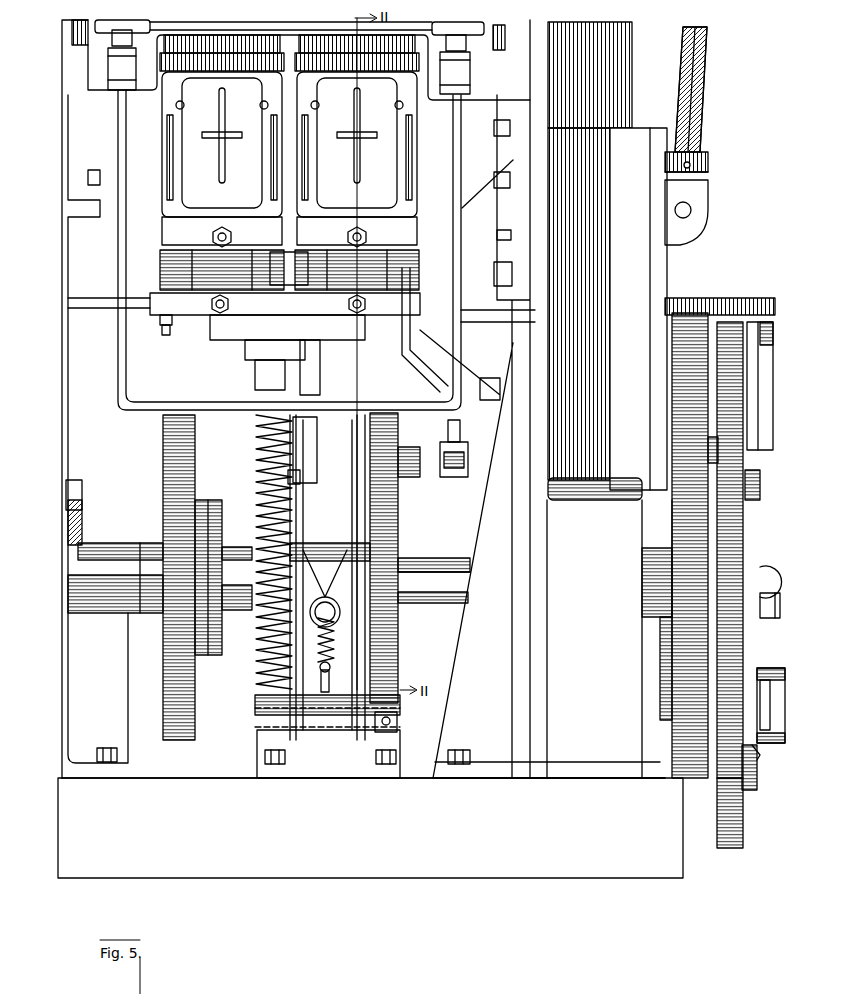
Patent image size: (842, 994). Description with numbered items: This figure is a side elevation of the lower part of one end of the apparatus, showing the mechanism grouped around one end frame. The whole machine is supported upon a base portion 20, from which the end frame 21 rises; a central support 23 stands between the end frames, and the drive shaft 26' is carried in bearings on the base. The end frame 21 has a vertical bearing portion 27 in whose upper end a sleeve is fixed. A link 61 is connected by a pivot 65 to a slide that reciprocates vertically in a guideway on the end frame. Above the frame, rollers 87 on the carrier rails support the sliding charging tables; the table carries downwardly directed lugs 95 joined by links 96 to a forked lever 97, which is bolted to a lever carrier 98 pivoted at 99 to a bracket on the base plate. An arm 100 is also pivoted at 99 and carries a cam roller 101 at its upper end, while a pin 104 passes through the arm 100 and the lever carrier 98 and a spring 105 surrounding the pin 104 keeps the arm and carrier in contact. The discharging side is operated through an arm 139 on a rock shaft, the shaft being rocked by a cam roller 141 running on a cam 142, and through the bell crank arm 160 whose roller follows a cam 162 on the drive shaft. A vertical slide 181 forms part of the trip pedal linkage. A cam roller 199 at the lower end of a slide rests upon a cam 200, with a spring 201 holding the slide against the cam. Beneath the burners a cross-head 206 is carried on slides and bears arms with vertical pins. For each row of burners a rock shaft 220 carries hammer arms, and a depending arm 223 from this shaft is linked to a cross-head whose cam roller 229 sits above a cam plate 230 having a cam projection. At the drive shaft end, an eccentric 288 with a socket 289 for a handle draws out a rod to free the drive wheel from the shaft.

The base portion 20 is at (455, 872).
The end frame 21 is at (547, 196).
The central support 23 is at (66, 468).
The drive shaft 26' is at (434, 569).
The vertical bearing portion 27 is at (632, 32).
The link 61 is at (705, 85).
The pivot 65 is at (692, 210).
The rollers 87 is at (75, 40).
The lugs 95 is at (113, 38).
The links 96 is at (112, 68).
The forked lever 97 is at (162, 393).
The lever carrier 98 is at (295, 685).
The pivot 99 is at (400, 718).
The arm 100 is at (362, 603).
The cam roller 101 is at (380, 575).
The pin 104 is at (330, 664).
The spring 105 is at (330, 632).
The arm 139 is at (770, 715).
The cam roller 141 is at (758, 752).
The cam 142 is at (755, 640).
The arm of bell crank lever 160 is at (765, 396).
The cam 162 is at (735, 818).
The vertical slide 181 is at (160, 237).
The cam roller 199 is at (305, 462).
The cam 200 is at (300, 515).
The spring 201 is at (252, 668).
The cross-head 206 is at (210, 330).
The rock shaft 220 is at (412, 272).
The depending arm 223 is at (402, 338).
The cam roller 229 is at (410, 480).
The cam plate 230 is at (406, 512).
The eccentric 288 is at (778, 580).
The socket 289 is at (780, 616).